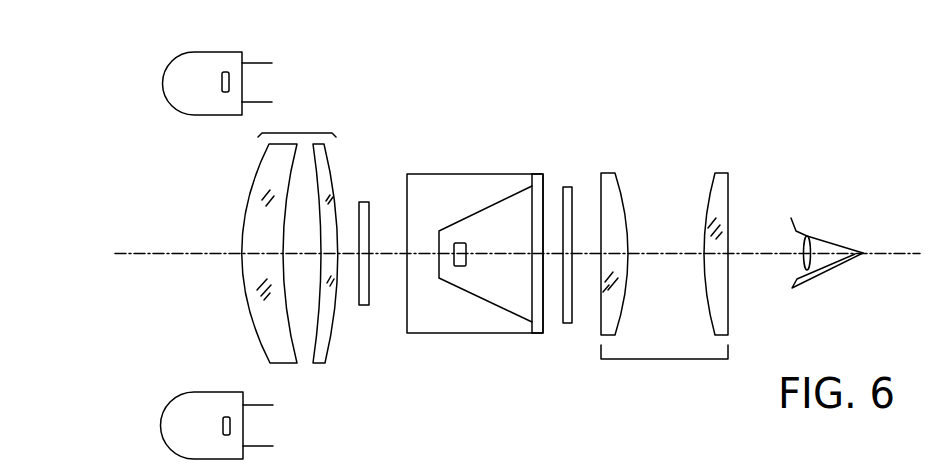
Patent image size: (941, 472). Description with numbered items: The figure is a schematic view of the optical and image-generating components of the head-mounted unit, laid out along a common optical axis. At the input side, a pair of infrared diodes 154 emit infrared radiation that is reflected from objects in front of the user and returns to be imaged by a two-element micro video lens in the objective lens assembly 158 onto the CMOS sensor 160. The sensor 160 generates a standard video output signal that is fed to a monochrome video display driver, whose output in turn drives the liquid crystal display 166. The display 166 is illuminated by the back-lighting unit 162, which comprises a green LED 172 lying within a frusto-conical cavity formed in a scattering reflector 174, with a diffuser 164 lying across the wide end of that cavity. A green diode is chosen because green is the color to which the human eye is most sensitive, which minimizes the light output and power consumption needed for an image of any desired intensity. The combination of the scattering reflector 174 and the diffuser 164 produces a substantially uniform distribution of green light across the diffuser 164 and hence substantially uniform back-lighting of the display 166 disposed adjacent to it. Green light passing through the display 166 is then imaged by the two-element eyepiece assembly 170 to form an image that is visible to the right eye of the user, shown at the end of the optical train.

The infrared diodes 154 is at (217, 115).
The objective lens assembly 158 is at (293, 131).
The CMOS sensor 160 is at (365, 305).
The back-lighting unit 162 is at (425, 199).
The diffuser 164 is at (537, 333).
The liquid crystal display 166 is at (567, 323).
The eyepiece assembly 170 is at (690, 360).
The green LED 172 is at (455, 268).
The scattering reflector 174 is at (477, 212).